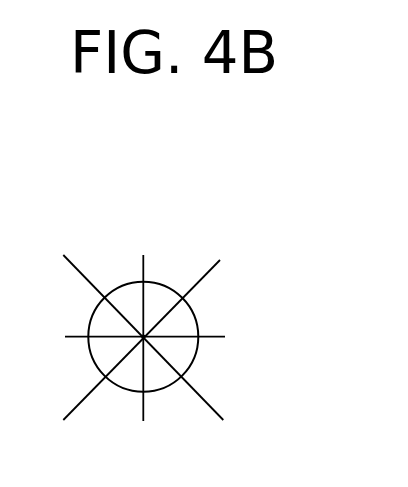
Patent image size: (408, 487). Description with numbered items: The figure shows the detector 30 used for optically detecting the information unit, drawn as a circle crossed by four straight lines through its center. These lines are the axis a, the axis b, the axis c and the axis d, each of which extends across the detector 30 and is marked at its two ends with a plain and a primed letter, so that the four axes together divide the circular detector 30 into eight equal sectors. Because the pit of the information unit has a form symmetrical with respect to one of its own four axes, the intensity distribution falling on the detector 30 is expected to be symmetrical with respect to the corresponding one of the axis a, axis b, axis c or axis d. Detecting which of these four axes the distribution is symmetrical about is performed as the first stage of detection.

The detector 30 is at (210, 303).
The axis aa' a is at (48, 333).
The axis bb' b is at (64, 218).
The axis cc' c is at (160, 212).
The axis dd' d is at (250, 220).